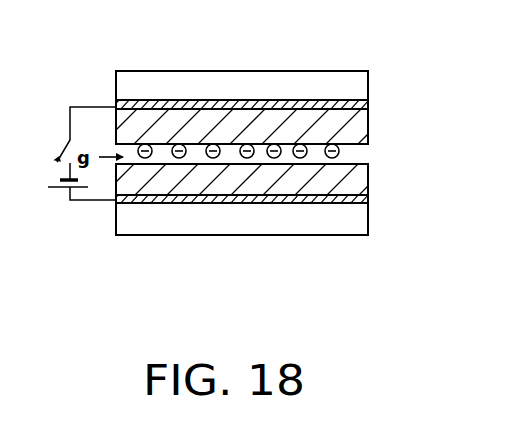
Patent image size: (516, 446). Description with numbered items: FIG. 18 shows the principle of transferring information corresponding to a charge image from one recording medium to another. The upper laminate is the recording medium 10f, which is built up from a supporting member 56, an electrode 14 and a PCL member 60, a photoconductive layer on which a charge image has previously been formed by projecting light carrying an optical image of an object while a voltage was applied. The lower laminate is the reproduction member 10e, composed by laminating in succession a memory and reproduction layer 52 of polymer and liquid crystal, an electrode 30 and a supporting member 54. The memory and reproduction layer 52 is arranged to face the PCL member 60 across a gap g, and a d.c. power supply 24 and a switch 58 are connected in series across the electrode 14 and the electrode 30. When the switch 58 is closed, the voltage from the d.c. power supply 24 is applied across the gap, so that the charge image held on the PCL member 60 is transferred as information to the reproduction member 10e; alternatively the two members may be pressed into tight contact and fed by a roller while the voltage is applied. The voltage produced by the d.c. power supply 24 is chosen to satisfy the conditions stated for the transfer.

The recording medium 10f is at (265, 77).
The reproduction member 10e is at (263, 237).
The supporting member 56 is at (362, 88).
The electrode 14 is at (368, 107).
The PCL member 60 is at (362, 128).
The memory and reproduction layer 52 is at (362, 180).
The electrode 30 is at (362, 199).
The supporting member 54 is at (360, 222).
The switch 58 is at (57, 137).
The d.c. power supply 24 is at (52, 182).